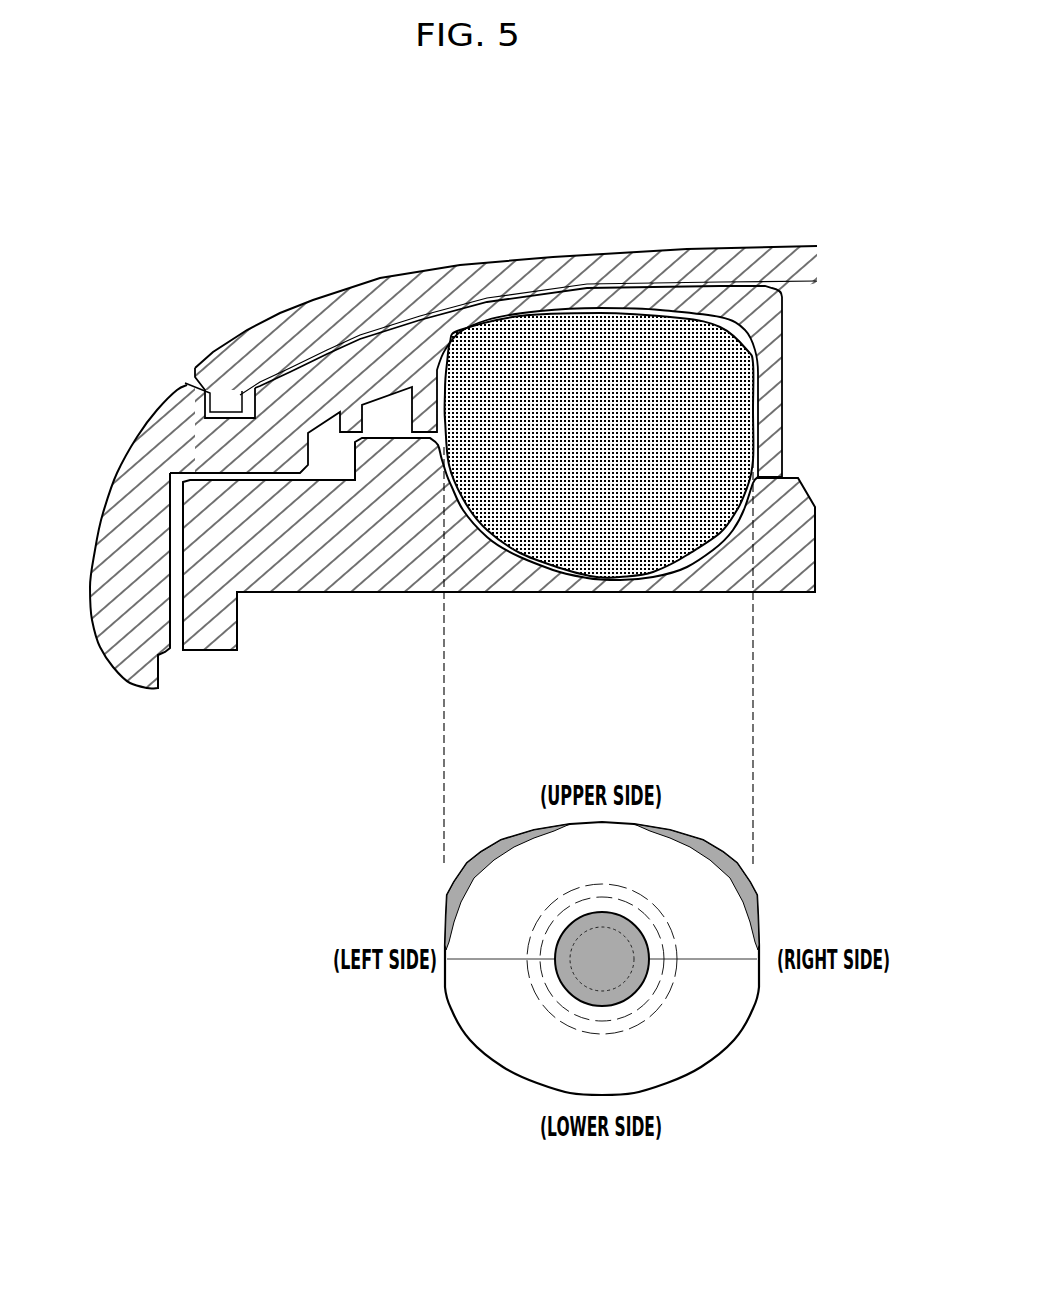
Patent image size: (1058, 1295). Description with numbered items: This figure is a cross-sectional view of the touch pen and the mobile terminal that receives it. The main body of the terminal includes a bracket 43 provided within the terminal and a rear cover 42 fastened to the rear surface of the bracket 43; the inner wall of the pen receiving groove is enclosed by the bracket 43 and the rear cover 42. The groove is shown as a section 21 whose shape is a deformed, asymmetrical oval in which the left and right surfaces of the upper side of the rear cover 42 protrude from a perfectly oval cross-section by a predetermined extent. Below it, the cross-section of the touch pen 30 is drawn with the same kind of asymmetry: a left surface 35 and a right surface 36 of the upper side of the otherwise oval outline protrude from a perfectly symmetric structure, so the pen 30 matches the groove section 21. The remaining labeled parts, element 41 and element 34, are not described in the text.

The section of the pen receiving groove 21 is at (673, 428).
The touch pen 30 is at (456, 1012).
The central tube 34 is at (587, 973).
The left surface 35 is at (465, 862).
The right surface 36 is at (738, 862).
The upper cover plate 41 is at (504, 272).
The rear cover 42 is at (143, 493).
The bracket 43 is at (323, 573).